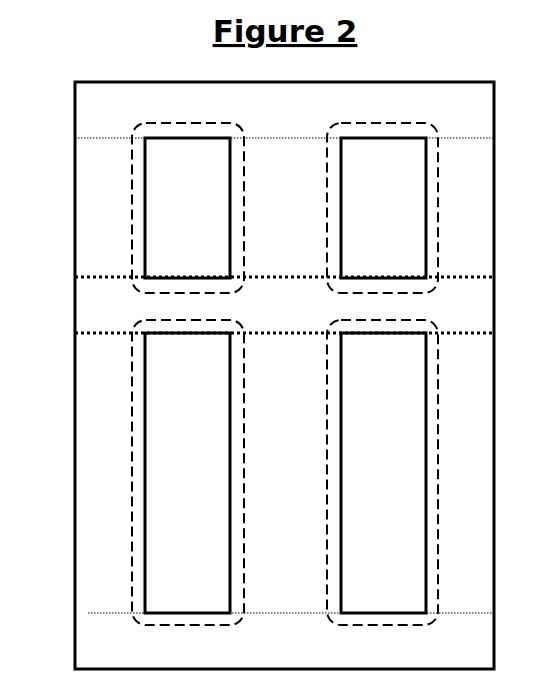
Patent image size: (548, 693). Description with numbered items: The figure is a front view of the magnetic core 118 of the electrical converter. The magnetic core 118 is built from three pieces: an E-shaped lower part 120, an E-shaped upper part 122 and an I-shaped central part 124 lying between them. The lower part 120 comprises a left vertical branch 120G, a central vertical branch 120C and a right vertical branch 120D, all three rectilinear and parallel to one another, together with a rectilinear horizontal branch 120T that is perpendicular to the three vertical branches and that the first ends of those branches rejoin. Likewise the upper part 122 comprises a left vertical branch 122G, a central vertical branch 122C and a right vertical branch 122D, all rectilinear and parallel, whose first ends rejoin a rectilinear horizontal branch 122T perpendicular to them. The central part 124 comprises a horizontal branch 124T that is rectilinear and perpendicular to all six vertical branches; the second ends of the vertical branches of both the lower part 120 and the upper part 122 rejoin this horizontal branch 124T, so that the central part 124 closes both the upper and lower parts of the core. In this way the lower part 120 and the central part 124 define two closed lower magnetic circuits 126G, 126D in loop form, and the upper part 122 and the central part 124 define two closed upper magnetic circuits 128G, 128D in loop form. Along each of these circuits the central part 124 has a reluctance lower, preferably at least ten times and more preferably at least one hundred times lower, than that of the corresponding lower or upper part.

The magnetic core 118 is at (506, 269).
The lower part 120 is at (66, 583).
The upper part 122 is at (66, 184).
The central part 124 is at (66, 317).
The left vertical branch 120G is at (77, 477).
The central vertical branch 120C is at (311, 478).
The right vertical branch 120D is at (441, 477).
The horizontal branch 120T is at (311, 651).
The left vertical branch 122G is at (77, 219).
The central vertical branch 122C is at (311, 218).
The right vertical branch 122D is at (441, 219).
The horizontal branch 122T is at (311, 120).
The horizontal branch 124T is at (311, 316).
The lower magnetic circuit 126G is at (188, 625).
The lower magnetic circuit 126D is at (383, 625).
The upper magnetic circuit 128G is at (188, 123).
The upper magnetic circuit 128D is at (383, 123).